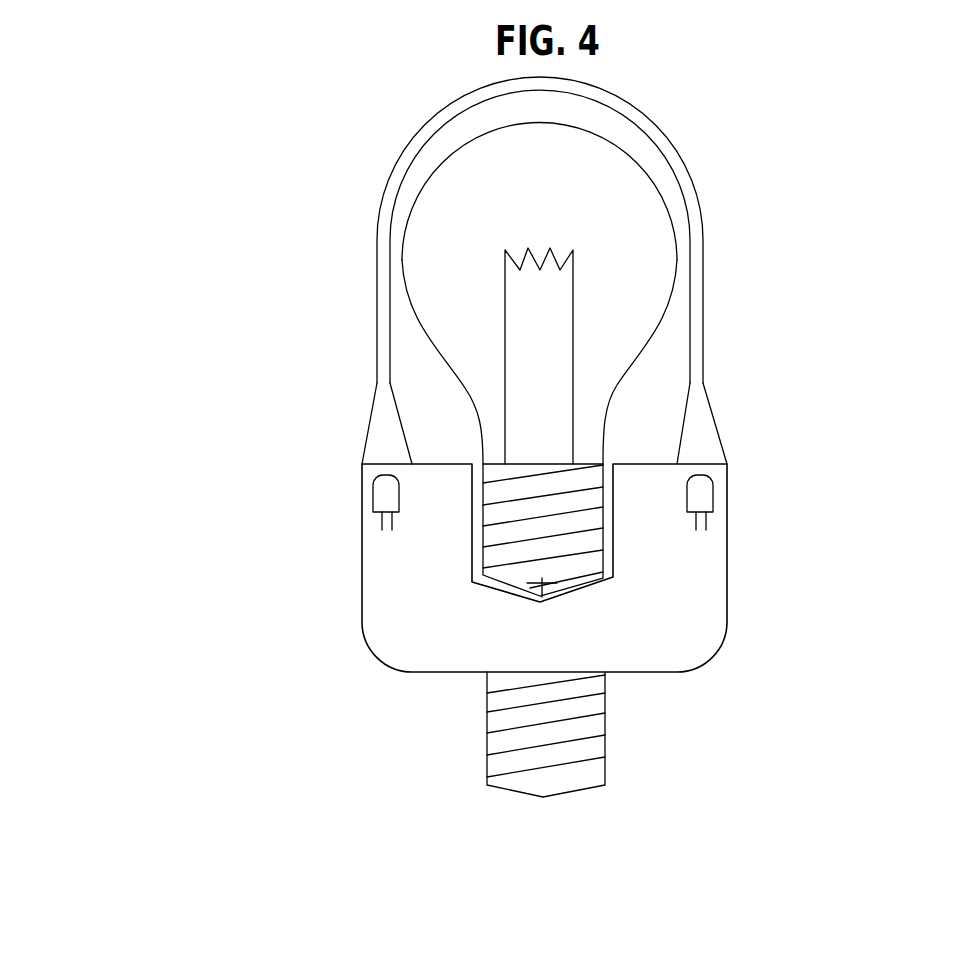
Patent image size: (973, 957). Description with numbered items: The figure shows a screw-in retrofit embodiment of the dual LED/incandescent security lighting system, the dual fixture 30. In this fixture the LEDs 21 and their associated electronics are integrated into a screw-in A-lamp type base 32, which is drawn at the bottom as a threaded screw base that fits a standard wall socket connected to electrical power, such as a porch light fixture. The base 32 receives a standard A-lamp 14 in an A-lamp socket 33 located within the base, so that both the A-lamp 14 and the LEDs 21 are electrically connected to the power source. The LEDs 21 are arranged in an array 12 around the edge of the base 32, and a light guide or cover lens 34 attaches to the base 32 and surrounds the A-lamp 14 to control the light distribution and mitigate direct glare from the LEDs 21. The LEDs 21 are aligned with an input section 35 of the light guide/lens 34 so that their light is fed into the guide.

The dual fixture 30 is at (296, 143).
The A-lamp 14 is at (678, 197).
The light guide or cover lens 34 is at (377, 257).
The input section 35 is at (367, 435).
The array 12 is at (336, 514).
The LEDs 21 is at (713, 498).
The A-lamp socket 33 is at (628, 582).
The screw-in A-lamp type base 32 is at (620, 757).